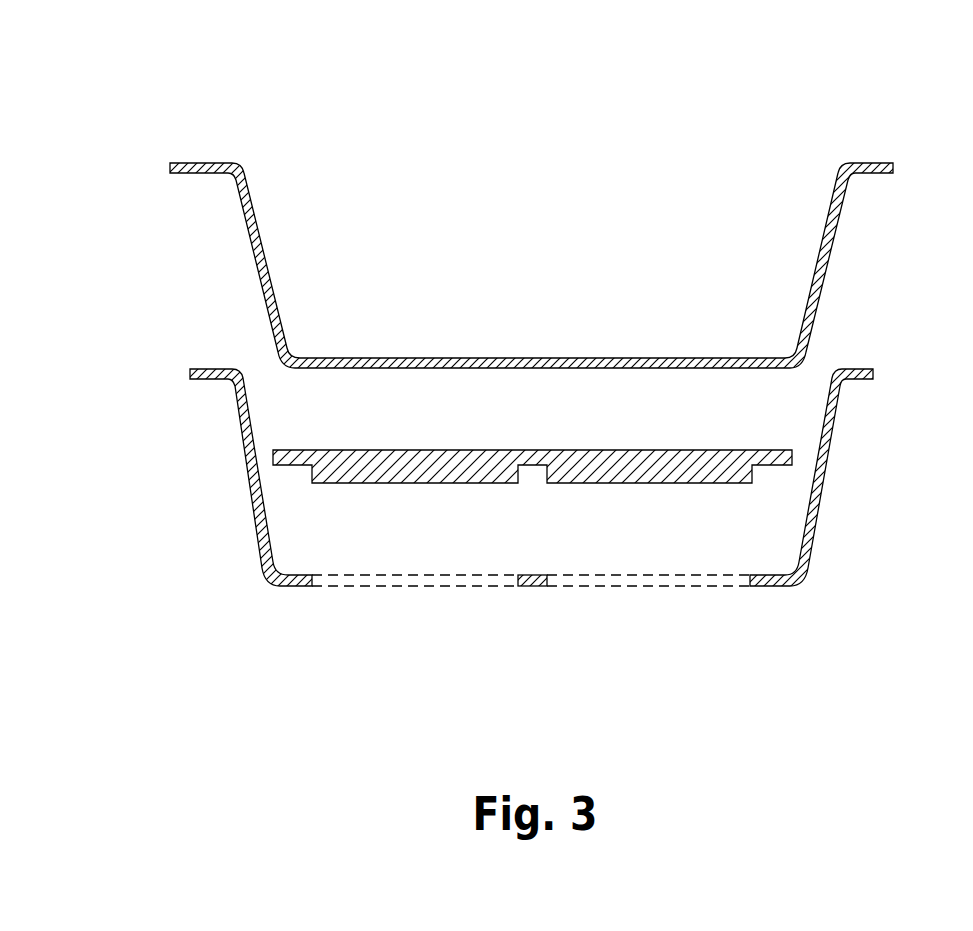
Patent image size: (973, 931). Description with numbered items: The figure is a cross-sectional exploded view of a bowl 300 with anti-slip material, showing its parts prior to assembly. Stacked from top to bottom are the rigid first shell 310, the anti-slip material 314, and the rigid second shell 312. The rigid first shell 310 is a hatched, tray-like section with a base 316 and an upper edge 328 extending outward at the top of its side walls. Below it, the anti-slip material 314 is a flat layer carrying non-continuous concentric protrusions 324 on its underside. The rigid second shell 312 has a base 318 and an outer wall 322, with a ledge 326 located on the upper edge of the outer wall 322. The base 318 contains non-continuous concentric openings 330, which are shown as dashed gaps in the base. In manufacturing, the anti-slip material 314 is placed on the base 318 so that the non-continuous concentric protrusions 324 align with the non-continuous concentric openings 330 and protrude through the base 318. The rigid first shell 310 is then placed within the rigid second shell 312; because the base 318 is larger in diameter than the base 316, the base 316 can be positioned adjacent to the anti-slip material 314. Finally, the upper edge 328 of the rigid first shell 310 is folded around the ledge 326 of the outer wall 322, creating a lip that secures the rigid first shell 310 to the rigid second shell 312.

The bowl 300 is at (112, 103).
The rigid first shell 310 is at (160, 157).
The rigid second shell 312 is at (520, 540).
The anti-slip material 314 is at (297, 450).
The base of the rigid first shell 316 is at (273, 330).
The base of the rigid second shell 318 is at (273, 598).
The outer wall of the rigid second shell 322 is at (873, 392).
The non-continuous concentric protrusions 324 is at (312, 492).
The ledge 326 is at (873, 373).
The upper edge of the rigid first shell 328 is at (893, 167).
The non-continuous concentric openings 330 is at (312, 598).